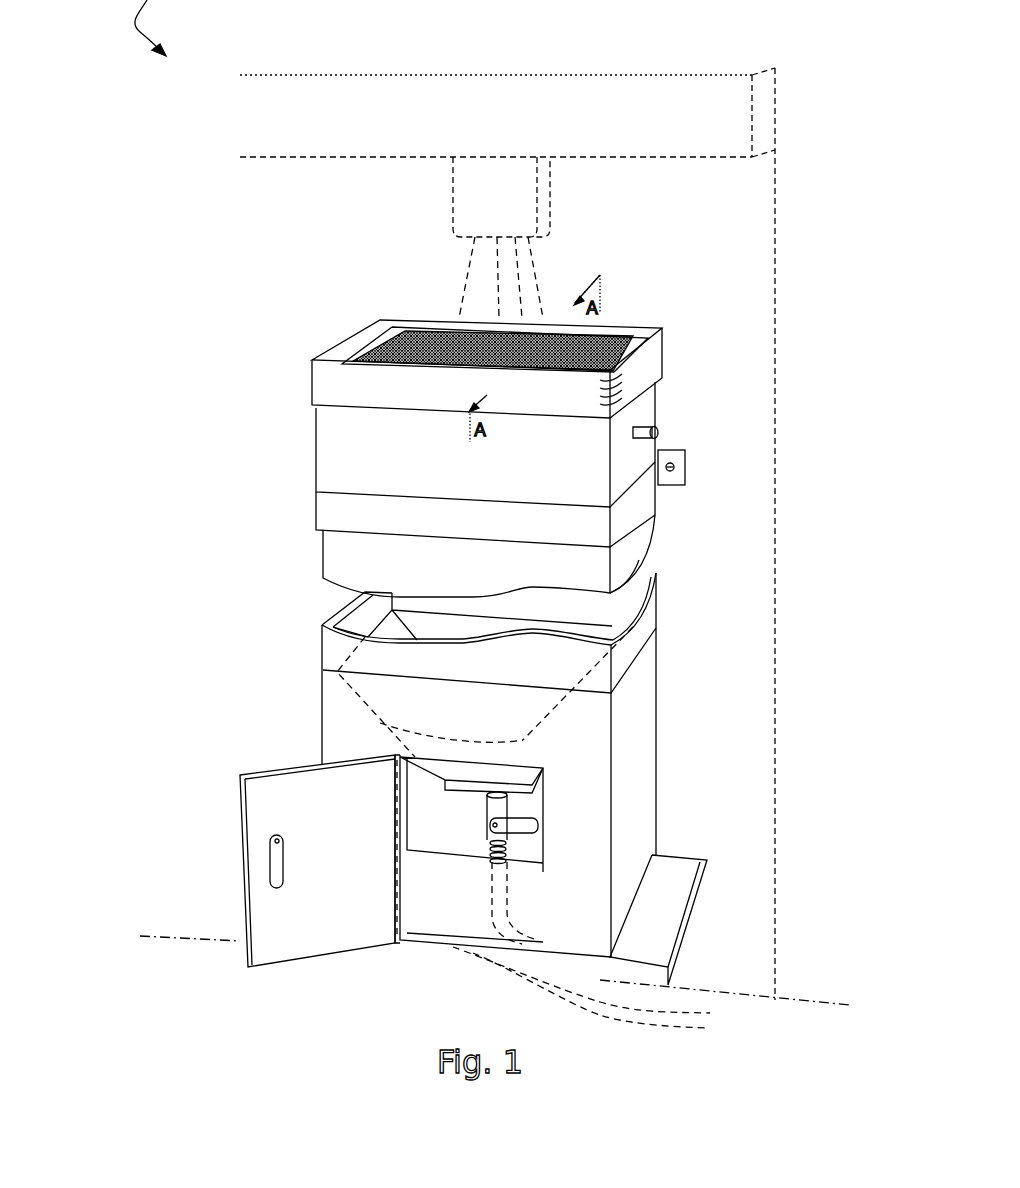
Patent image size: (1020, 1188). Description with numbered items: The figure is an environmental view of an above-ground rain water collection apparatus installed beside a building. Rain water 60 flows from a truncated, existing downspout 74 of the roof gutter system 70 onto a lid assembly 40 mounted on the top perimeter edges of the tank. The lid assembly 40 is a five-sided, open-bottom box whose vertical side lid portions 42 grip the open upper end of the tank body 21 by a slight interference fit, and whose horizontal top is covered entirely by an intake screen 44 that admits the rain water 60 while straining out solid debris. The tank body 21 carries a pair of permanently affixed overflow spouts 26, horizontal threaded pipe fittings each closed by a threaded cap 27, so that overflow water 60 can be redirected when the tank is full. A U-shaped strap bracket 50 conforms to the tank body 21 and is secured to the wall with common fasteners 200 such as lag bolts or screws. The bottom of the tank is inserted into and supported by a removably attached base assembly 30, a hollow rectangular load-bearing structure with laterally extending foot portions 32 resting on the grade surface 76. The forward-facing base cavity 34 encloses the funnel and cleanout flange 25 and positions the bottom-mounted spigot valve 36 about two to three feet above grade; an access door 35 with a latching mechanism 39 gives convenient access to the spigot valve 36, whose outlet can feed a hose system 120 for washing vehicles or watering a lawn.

The tank body 21 is at (322, 660).
The cleanout flange 25 is at (533, 788).
The overflow spouts 26 is at (637, 431).
The threaded cap 27 is at (660, 432).
The base assembly 30 is at (660, 830).
The foot portions 32 is at (680, 892).
The base cavity 34 is at (447, 906).
The access door 35 is at (262, 775).
The spigot valve 36 is at (503, 813).
The latching mechanism 39 is at (277, 858).
The lid assembly 40 is at (316, 342).
The side lid portions 42 is at (651, 370).
The intake screen 44 is at (402, 342).
The strap bracket 50 is at (678, 485).
The rain water 60 is at (520, 295).
The roof gutter system 70 is at (763, 92).
The downspout 74 is at (453, 180).
The grade surface 76 is at (795, 997).
The hose system 120 is at (663, 1012).
The fasteners 200 is at (675, 465).